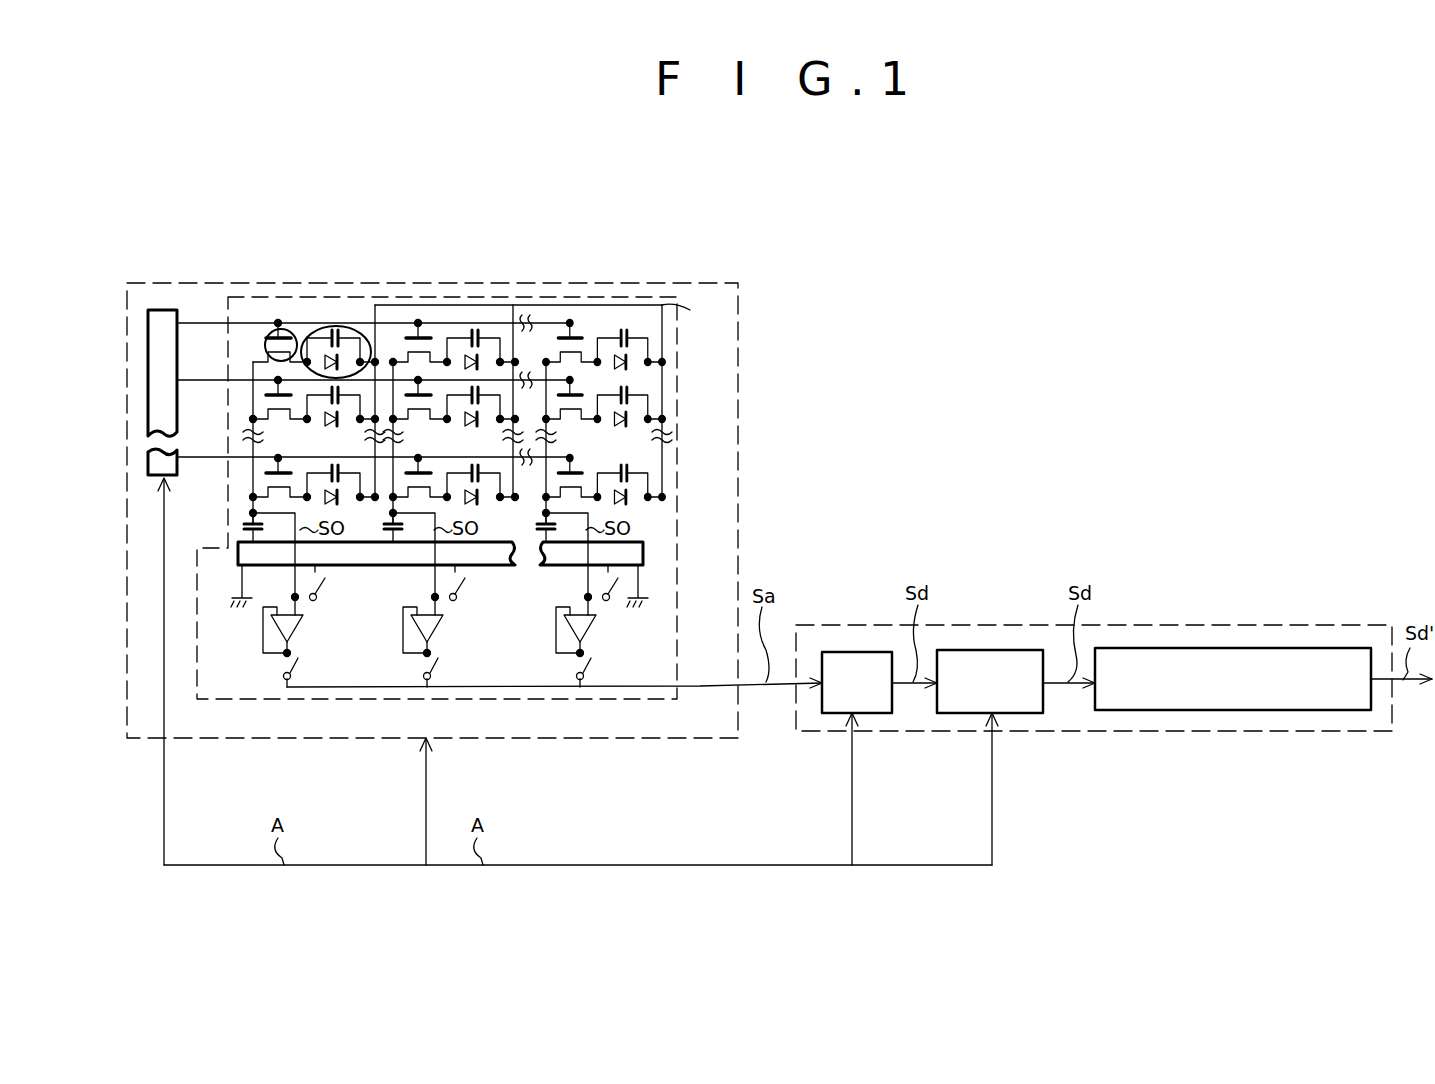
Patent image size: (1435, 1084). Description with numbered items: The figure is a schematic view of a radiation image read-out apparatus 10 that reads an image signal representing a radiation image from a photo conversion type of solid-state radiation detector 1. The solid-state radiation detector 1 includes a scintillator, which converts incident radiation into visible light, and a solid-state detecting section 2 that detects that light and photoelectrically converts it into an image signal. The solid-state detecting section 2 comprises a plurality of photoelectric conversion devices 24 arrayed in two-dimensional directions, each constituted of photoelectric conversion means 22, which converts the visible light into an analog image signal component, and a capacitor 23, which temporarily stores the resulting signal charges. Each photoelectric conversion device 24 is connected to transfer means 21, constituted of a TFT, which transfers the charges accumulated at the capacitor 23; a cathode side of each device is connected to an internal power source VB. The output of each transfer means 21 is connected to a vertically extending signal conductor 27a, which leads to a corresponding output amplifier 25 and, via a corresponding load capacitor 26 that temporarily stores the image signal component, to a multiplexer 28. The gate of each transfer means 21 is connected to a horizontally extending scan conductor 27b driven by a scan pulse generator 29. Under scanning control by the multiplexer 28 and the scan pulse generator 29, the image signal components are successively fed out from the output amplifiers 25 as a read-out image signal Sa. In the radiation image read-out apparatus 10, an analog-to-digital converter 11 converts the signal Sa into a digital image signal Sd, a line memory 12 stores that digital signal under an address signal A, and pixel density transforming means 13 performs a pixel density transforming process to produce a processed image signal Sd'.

The solid-state radiation detector 1 is at (455, 283).
The solid-state detecting section 2 is at (406, 296).
The radiation image read-out apparatus 10 is at (986, 625).
The analog-to-digital converter 11 is at (858, 652).
The line memory 12 is at (1022, 650).
The pixel density transforming means 13 is at (1240, 648).
The transfer means 21 is at (278, 327).
The photoelectric conversion means 22 is at (324, 333).
The capacitor 23 is at (347, 358).
The photoelectric conversion device 24 is at (348, 286).
The output amplifier 25 is at (259, 680).
The load capacitor 26 is at (234, 529).
The signal conductor 27a is at (548, 360).
The scan conductor 27b is at (193, 380).
The multiplexer 28 is at (643, 565).
The scan pulse generator 29 is at (164, 308).